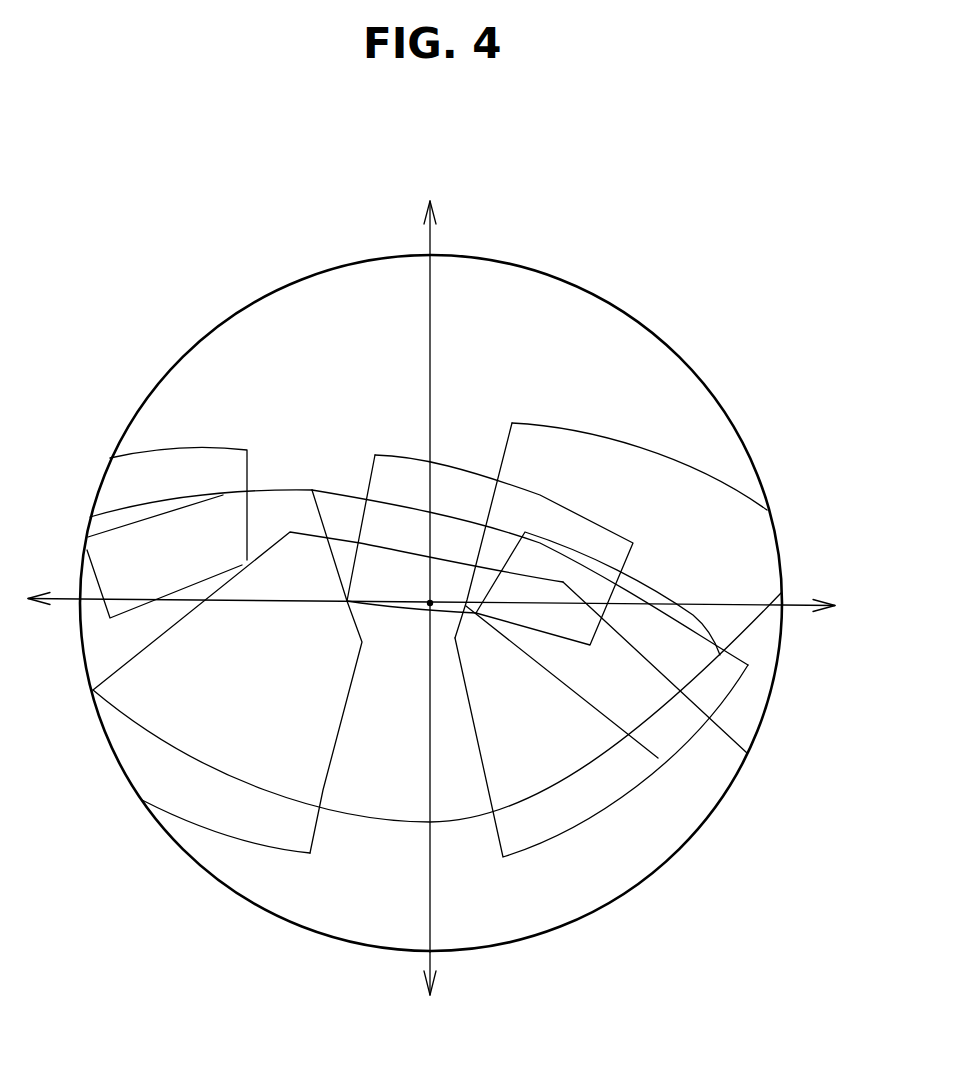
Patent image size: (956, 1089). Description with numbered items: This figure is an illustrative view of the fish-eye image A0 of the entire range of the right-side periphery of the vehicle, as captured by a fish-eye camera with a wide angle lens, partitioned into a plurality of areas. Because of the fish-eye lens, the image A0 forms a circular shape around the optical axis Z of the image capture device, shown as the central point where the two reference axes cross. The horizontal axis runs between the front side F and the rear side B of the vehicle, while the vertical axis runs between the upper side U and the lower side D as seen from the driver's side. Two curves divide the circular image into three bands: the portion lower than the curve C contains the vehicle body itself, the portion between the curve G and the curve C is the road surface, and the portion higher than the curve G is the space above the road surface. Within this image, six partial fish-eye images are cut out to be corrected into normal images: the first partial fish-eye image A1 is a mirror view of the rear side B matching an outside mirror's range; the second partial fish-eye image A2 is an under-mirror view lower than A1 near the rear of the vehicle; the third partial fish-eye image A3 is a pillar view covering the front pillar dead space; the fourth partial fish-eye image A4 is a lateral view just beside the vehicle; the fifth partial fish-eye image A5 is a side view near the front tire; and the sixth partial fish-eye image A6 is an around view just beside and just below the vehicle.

The fish-eye image of the entire range A0 is at (512, 262).
The first partial fish-eye image (mirror view) A1 is at (667, 478).
The second partial fish-eye image (under-mirror view) A2 is at (590, 797).
The third partial fish-eye image (pillar view) A3 is at (138, 472).
The fourth partial fish-eye image (lateral view) A4 is at (455, 478).
The fifth partial fish-eye image (side view) A5 is at (210, 805).
The sixth partial fish-eye image (around view) A6 is at (480, 905).
The curve G (road surface boundary) G is at (343, 493).
The curve C (vehicle boundary) C is at (370, 820).
The optical axis Z is at (428, 606).
The upper side U is at (430, 387).
The lower side D is at (430, 818).
The front side F is at (229, 582).
The rear side B is at (633, 592).